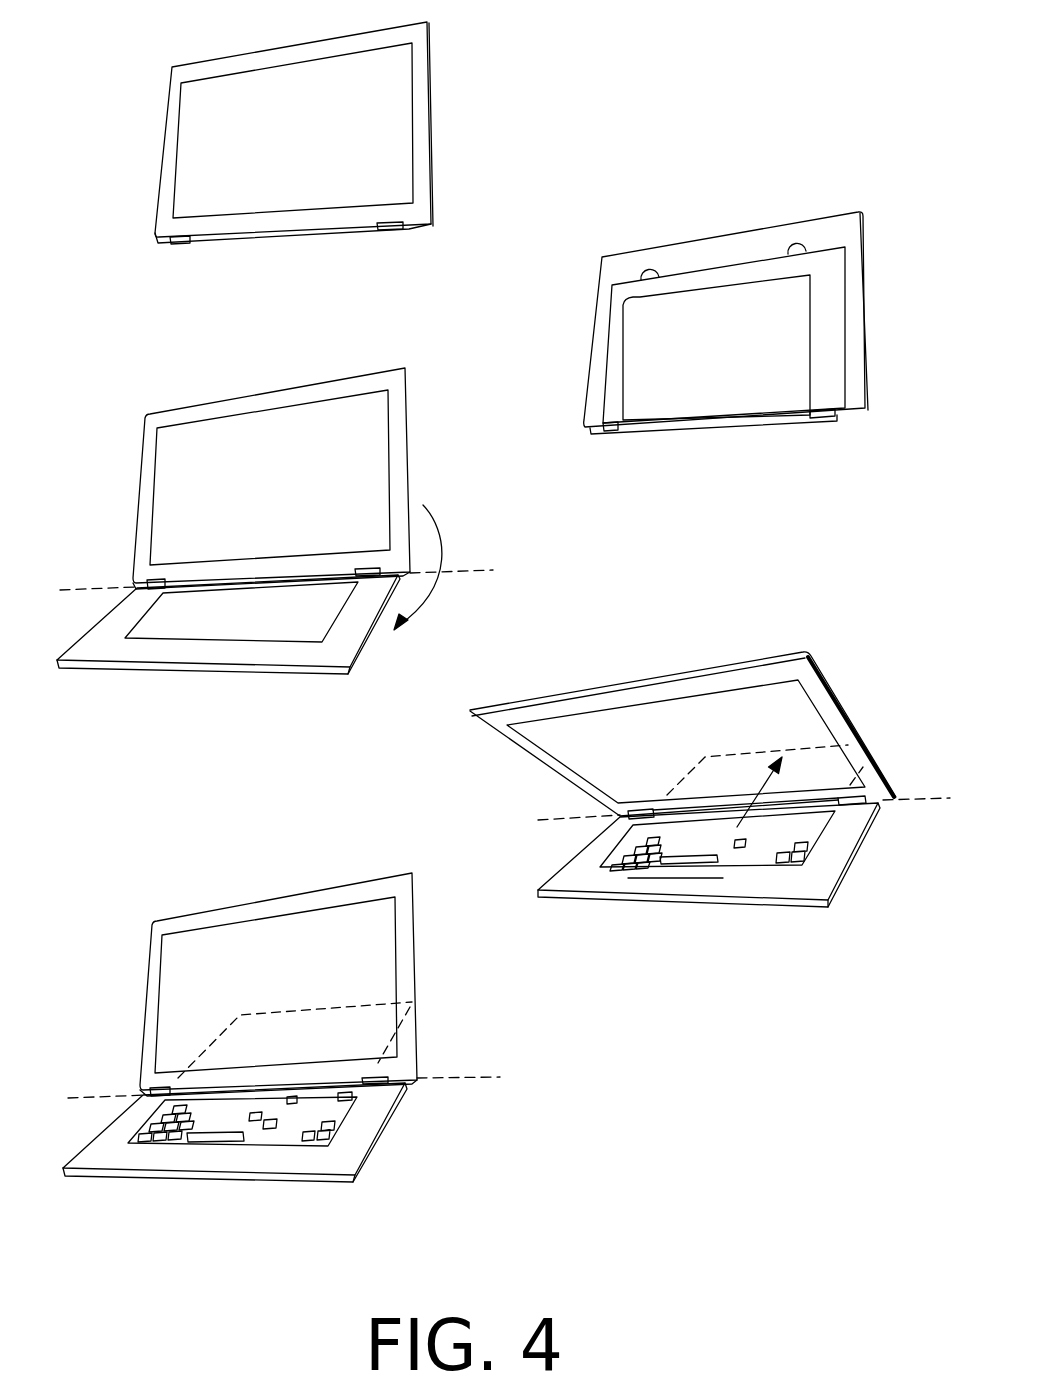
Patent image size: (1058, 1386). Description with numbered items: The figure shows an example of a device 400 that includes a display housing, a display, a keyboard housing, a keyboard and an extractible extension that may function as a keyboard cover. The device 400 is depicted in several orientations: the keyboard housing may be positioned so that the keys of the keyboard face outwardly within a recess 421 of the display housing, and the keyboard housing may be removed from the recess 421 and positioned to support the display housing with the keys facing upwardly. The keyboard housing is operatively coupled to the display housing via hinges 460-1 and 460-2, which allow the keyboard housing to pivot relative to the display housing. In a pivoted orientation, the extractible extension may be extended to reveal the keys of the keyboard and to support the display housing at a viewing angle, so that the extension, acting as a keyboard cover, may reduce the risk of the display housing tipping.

The device 400 is at (224, 19).
The recess 421 is at (843, 357).
The hinge 460-1 is at (181, 244).
The hinge 460-2 is at (395, 231).